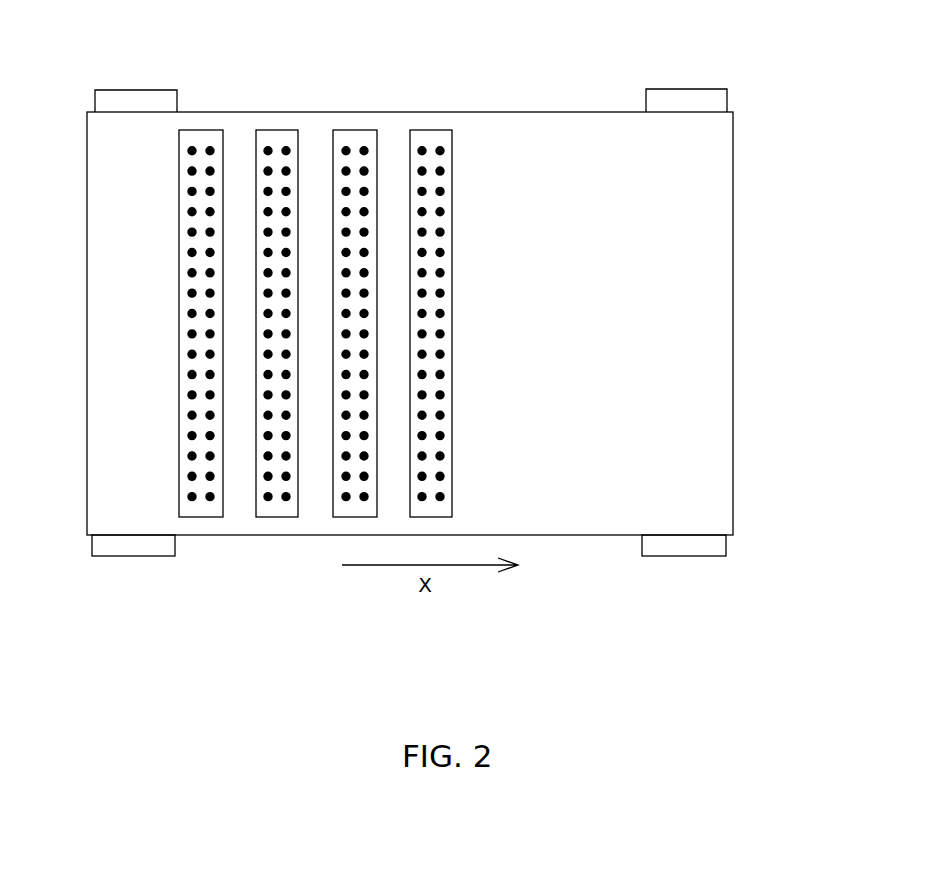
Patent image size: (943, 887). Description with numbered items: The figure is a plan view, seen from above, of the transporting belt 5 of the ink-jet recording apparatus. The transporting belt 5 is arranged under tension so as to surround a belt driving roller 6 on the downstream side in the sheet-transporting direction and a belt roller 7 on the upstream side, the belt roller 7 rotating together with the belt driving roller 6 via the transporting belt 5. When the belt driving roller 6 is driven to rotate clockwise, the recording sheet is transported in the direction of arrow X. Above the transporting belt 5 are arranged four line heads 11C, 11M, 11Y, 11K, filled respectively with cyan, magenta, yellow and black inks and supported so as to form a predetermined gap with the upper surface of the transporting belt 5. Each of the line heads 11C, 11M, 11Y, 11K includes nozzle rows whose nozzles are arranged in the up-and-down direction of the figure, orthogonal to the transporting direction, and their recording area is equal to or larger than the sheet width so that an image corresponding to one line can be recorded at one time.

The transporting belt 5 is at (722, 480).
The belt driving roller 6 is at (688, 98).
The belt roller 7 is at (137, 100).
The line head 11C is at (206, 135).
The line head 11M is at (277, 135).
The line head 11Y is at (359, 135).
The line head 11K is at (433, 135).